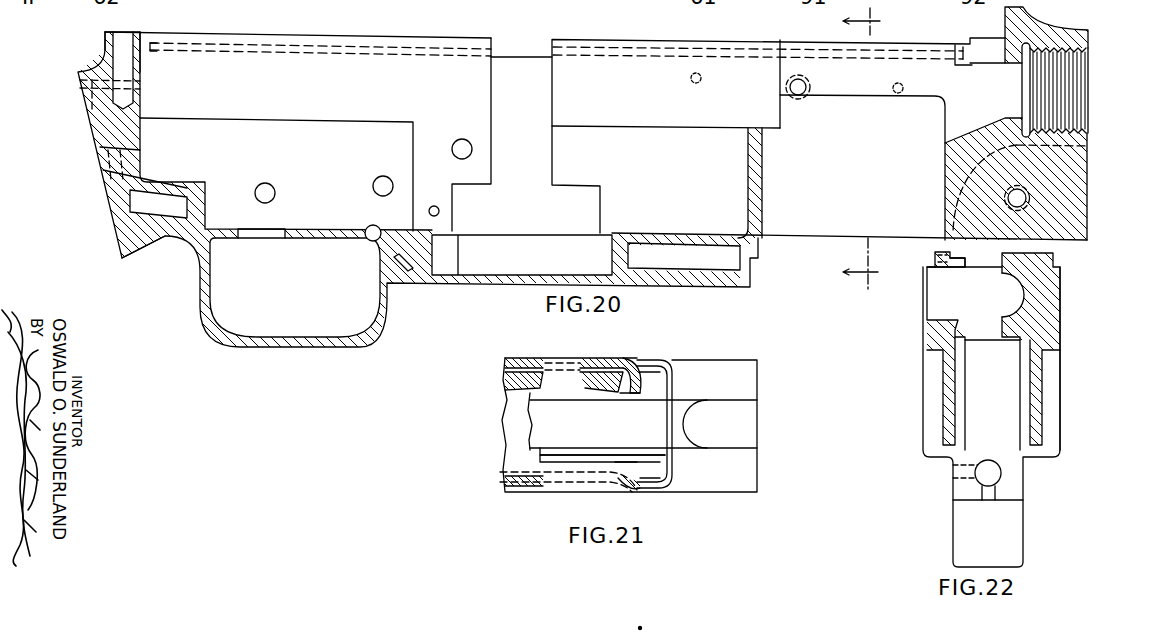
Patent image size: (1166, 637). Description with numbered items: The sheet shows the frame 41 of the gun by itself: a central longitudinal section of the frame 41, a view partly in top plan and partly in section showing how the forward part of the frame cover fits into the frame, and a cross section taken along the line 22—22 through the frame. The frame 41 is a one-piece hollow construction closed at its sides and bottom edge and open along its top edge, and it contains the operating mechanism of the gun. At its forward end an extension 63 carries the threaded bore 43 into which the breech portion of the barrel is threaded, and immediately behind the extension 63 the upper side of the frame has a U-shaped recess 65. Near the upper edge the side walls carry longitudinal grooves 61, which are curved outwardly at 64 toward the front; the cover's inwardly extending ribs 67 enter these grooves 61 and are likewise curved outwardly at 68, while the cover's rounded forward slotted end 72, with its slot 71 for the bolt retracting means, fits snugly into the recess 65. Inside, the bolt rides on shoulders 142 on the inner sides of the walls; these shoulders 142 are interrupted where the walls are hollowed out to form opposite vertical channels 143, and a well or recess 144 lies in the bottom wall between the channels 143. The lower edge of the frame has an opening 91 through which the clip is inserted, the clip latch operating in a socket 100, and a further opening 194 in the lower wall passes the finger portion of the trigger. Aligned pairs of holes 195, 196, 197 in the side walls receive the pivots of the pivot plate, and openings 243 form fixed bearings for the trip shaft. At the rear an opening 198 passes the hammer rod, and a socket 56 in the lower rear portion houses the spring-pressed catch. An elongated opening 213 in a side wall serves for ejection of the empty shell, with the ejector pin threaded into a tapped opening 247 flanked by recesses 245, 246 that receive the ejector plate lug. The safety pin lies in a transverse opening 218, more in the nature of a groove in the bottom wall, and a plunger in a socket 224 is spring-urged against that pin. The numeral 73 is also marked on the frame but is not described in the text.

In FIG. 20, the section line 22— 22 is at (856, 147).
In FIG. 20, the frame 41 is at (631, 27).
In FIG. 22, the frame 41 is at (1110, 364).
In FIG. 20, the threaded bore 43 is at (1068, 92).
In FIG. 20, the socket 56 is at (150, 210).
In FIG. 20, the grooves 61 is at (258, 47).
In FIG. 22, the grooves 61 is at (936, 262).
In FIG. 20, the extension 63 is at (1062, 31).
In FIG. 21, the outwardly curved portion of the grooves 64 is at (624, 392).
In FIG. 21, the U-shaped recess 65 is at (652, 376).
In FIG. 21, the ribs 67 is at (520, 365).
In FIG. 21, the outwardly curved portion of the ribs 68 is at (612, 362).
In FIG. 21, the slot 71 is at (580, 457).
In FIG. 21, the forward slotted end of the cover 72 is at (640, 357).
In FIG. 20, the slot 73 is at (122, 47).
In FIG. 20, the opening 91 is at (798, 218).
In FIG. 22, the opening 91 is at (978, 445).
In FIG. 20, the socket 100 is at (661, 262).
In FIG. 22, the socket 100 is at (990, 476).
In FIG. 20, the shoulders 142 is at (313, 118).
In FIG. 22, the shoulders 142 is at (953, 327).
In FIG. 20, the vertical channels 143 is at (511, 80).
In FIG. 20, the well or recess 144 is at (482, 258).
In FIG. 20, the opening 194 is at (263, 238).
In FIG. 20, the holes 195 is at (462, 149).
In FIG. 20, the holes 196 is at (390, 160).
In FIG. 20, the holes 197 is at (265, 192).
In FIG. 20, the opening 198 is at (100, 160).
In FIG. 22, the elongated opening 213 is at (940, 297).
In FIG. 20, the opening 218 is at (373, 233).
In FIG. 20, the socket 224 is at (395, 263).
In FIG. 20, the openings 243 is at (439, 211).
In FIG. 20, the recess 245 is at (701, 79).
In FIG. 20, the recess 246 is at (903, 88).
In FIG. 20, the opening 247 is at (796, 96).